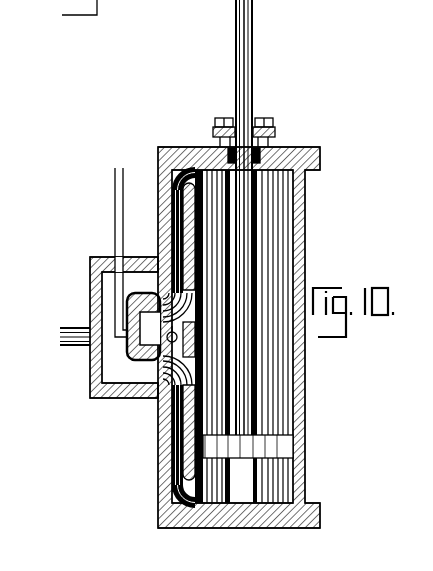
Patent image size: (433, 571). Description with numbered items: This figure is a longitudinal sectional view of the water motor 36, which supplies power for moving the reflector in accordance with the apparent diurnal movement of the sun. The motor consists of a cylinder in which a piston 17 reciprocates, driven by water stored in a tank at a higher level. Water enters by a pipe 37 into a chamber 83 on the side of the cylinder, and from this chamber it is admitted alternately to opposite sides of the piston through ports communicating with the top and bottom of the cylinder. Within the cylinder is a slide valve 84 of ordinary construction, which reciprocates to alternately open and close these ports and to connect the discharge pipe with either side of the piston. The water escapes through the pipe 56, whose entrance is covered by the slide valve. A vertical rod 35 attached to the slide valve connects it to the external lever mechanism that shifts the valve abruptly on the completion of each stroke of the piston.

The piston 17 is at (256, 217).
The vertical rod 35 is at (118, 193).
The water motor 36 is at (305, 214).
The pipe 37 is at (63, 331).
The pipe 56 is at (160, 362).
The chamber 83 is at (136, 340).
The slide valve 84 is at (128, 346).